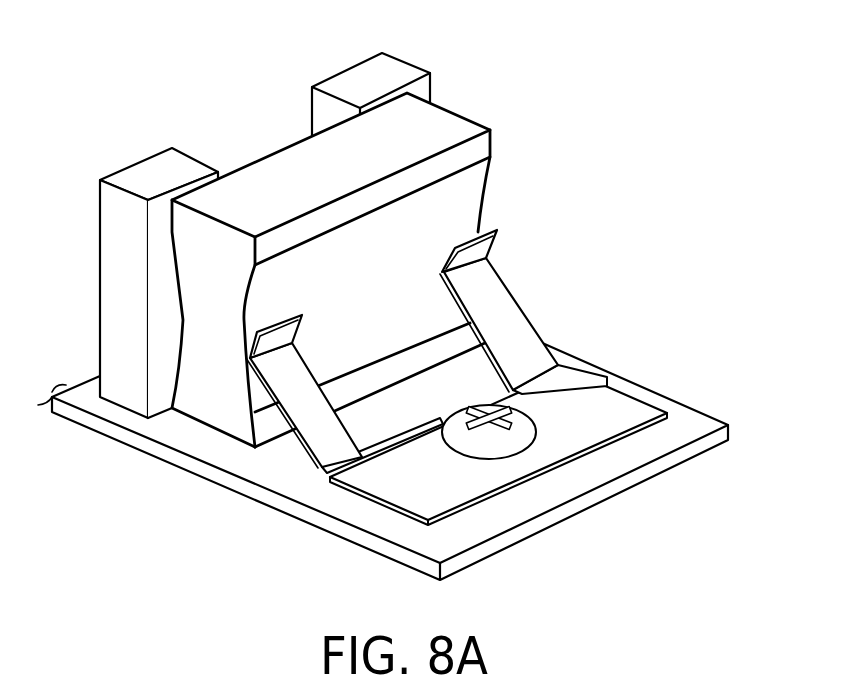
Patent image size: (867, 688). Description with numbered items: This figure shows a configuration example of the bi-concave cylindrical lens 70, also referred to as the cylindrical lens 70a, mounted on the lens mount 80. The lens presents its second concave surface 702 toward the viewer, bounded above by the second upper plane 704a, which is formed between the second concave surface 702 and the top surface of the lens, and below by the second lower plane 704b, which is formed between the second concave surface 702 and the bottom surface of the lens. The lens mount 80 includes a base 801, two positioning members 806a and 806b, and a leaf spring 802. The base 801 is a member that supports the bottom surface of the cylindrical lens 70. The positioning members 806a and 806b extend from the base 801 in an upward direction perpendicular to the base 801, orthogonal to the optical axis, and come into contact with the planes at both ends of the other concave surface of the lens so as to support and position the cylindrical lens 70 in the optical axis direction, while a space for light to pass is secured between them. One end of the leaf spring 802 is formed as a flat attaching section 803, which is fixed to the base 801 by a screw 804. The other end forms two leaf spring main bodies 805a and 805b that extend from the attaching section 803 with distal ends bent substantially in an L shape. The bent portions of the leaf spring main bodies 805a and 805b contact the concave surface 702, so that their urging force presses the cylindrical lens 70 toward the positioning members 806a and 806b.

The cylindrical lens 70 is at (352, 272).
The cylindrical lens 70a is at (352, 272).
The second concave surface 702 is at (465, 205).
The second upper plane 704a is at (477, 152).
The second lower plane 704b is at (273, 423).
The lens mount 80 is at (393, 419).
The base 801 is at (668, 437).
The leaf spring 802 is at (498, 441).
The attaching section 803 is at (577, 432).
The screw 804 is at (498, 443).
The leaf spring main body 805a is at (500, 290).
The leaf spring main body 805b is at (322, 467).
The positioning member 806a is at (345, 80).
The positioning member 806b is at (153, 170).